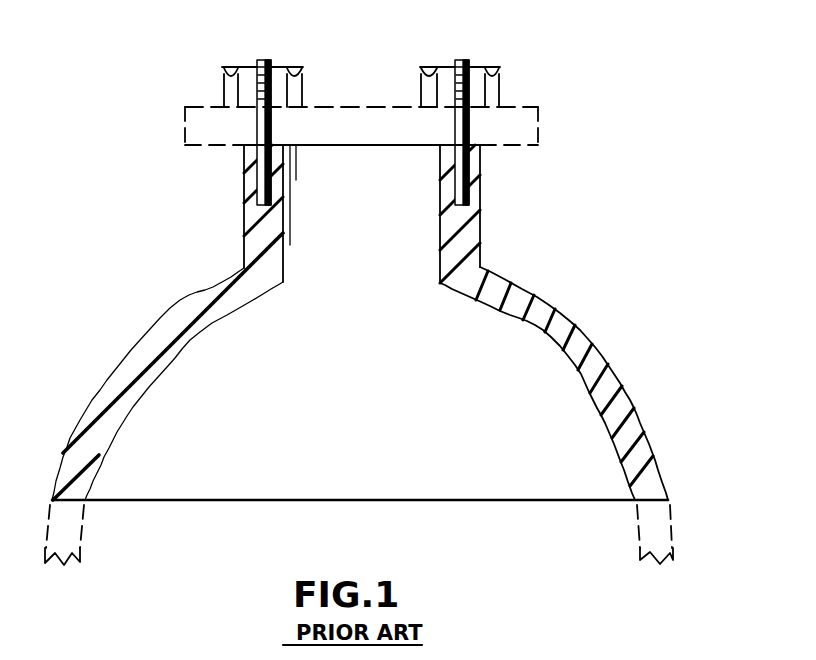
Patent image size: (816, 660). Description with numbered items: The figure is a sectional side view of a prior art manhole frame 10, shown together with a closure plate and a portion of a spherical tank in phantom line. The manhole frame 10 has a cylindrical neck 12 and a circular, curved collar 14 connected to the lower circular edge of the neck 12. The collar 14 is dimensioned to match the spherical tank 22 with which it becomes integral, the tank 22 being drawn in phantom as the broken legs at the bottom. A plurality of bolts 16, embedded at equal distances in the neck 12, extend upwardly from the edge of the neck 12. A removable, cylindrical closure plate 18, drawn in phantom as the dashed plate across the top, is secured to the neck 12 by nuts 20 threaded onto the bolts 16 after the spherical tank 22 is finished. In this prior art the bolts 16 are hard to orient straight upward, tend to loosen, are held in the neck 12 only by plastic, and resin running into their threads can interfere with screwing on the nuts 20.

The manhole frame 10 is at (148, 303).
The cylindrical neck 12 is at (472, 238).
The circular, curved collar 14 is at (583, 358).
The bolts 16 is at (253, 177).
The closure plate 18 is at (190, 106).
The nuts 20 is at (297, 65).
The spherical tank 22 is at (668, 532).